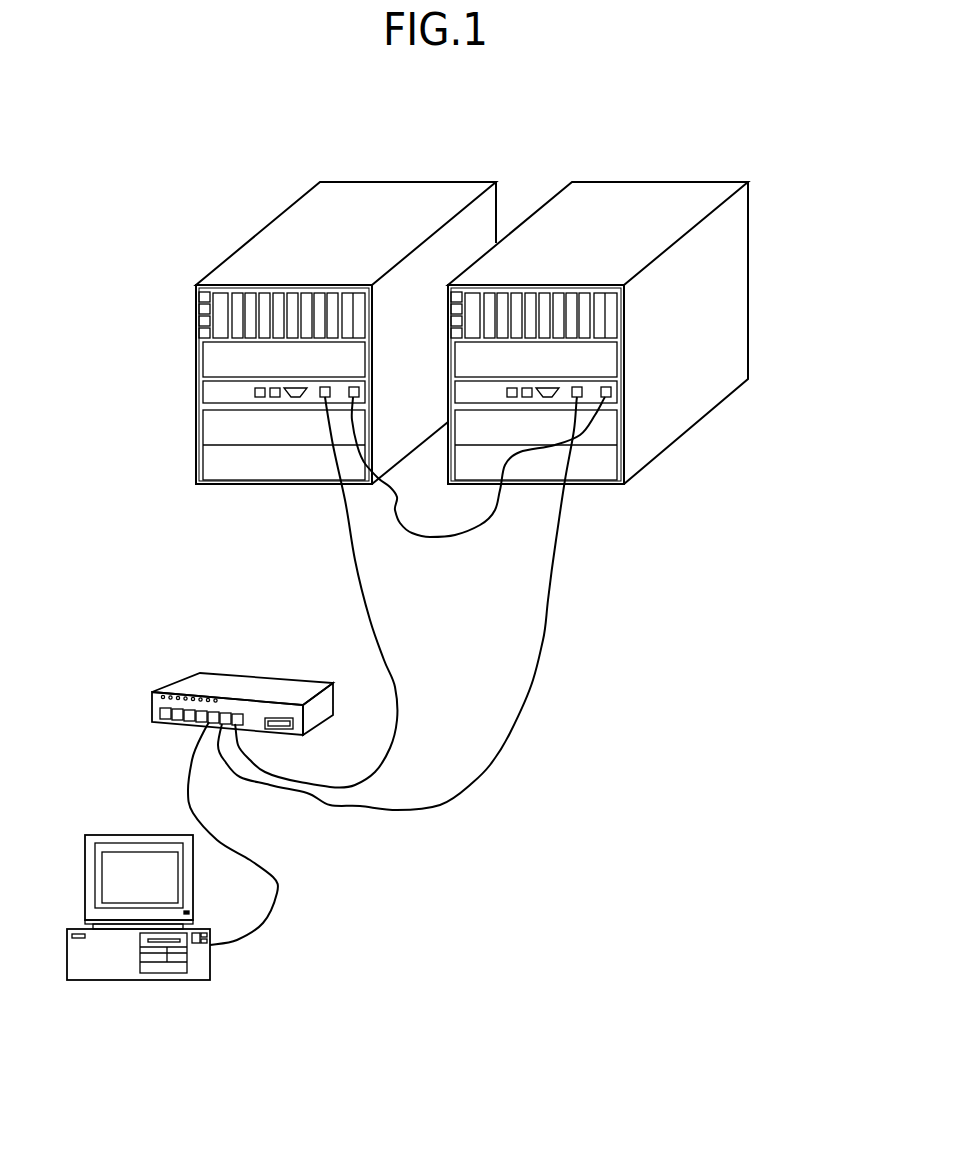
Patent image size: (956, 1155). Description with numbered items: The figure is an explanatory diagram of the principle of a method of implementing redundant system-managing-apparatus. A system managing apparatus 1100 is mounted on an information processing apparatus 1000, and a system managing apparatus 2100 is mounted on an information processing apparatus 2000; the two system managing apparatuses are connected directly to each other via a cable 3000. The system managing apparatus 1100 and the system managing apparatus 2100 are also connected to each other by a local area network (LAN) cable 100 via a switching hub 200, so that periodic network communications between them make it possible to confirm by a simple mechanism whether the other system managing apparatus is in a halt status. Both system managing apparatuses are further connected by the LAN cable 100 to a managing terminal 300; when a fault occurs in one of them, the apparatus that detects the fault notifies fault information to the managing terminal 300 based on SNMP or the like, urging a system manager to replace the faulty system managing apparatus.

The information processing apparatus 1000 is at (279, 309).
The information processing apparatus 2000 is at (648, 309).
The system managing apparatus 1100 is at (213, 360).
The system managing apparatus 2100 is at (603, 360).
The cable 3000 is at (442, 538).
The LAN cable 100 is at (395, 685).
The switching hub 200 is at (270, 680).
The managing terminal 300 is at (93, 833).